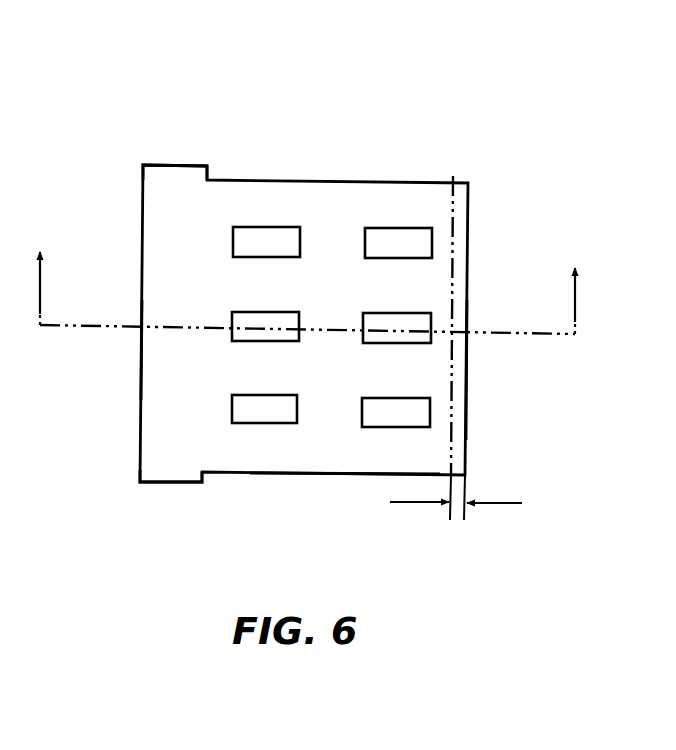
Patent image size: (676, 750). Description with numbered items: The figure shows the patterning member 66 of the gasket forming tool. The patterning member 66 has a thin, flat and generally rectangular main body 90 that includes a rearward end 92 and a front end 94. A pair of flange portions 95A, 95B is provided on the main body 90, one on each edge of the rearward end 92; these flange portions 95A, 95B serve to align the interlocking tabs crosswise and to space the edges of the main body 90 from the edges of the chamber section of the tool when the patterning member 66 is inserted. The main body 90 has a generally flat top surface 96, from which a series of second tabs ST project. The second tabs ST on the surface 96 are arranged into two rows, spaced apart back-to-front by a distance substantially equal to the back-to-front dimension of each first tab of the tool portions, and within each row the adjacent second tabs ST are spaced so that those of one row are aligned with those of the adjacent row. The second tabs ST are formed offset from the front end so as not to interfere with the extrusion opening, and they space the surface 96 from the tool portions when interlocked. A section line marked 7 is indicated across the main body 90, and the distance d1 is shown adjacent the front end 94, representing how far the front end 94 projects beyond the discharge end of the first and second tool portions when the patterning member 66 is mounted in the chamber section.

The patterning member 66 is at (211, 47).
The main body 90 is at (337, 177).
The rearward end 92 is at (141, 390).
The front end 94 is at (466, 420).
The flange portion 95A is at (178, 165).
The flange portion 95B is at (170, 483).
The top surface 96 is at (318, 433).
The second tabs ST is at (265, 227).
The section line 7- 7 is at (308, 277).
The distance d1 is at (484, 497).